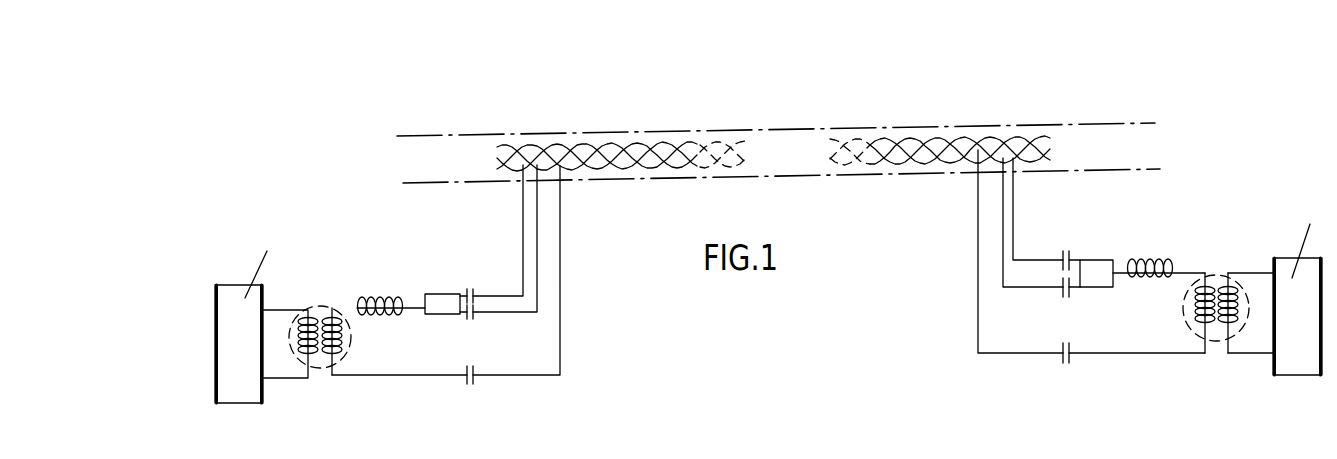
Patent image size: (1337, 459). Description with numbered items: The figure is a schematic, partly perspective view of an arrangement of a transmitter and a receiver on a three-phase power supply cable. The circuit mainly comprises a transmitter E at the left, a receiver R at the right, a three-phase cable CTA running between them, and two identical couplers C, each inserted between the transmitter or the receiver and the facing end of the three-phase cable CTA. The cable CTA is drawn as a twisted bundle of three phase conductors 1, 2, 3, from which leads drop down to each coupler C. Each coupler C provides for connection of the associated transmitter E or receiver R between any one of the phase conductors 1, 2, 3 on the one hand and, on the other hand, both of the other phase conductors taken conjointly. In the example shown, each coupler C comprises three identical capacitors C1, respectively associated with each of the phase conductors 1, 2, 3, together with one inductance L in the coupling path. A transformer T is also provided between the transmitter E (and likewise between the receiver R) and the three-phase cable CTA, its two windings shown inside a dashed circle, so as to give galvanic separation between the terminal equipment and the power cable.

The three-phase cable CTA is at (778, 132).
The phase conductor 1 is at (603, 168).
The phase conductor 2 is at (645, 170).
The phase conductor 3 is at (688, 168).
The transmitter E is at (247, 358).
The receiver R is at (1306, 329).
The transformer T is at (348, 340).
The inductance L is at (391, 295).
The capacitor C1 is at (478, 290).
The coupler C is at (414, 384).